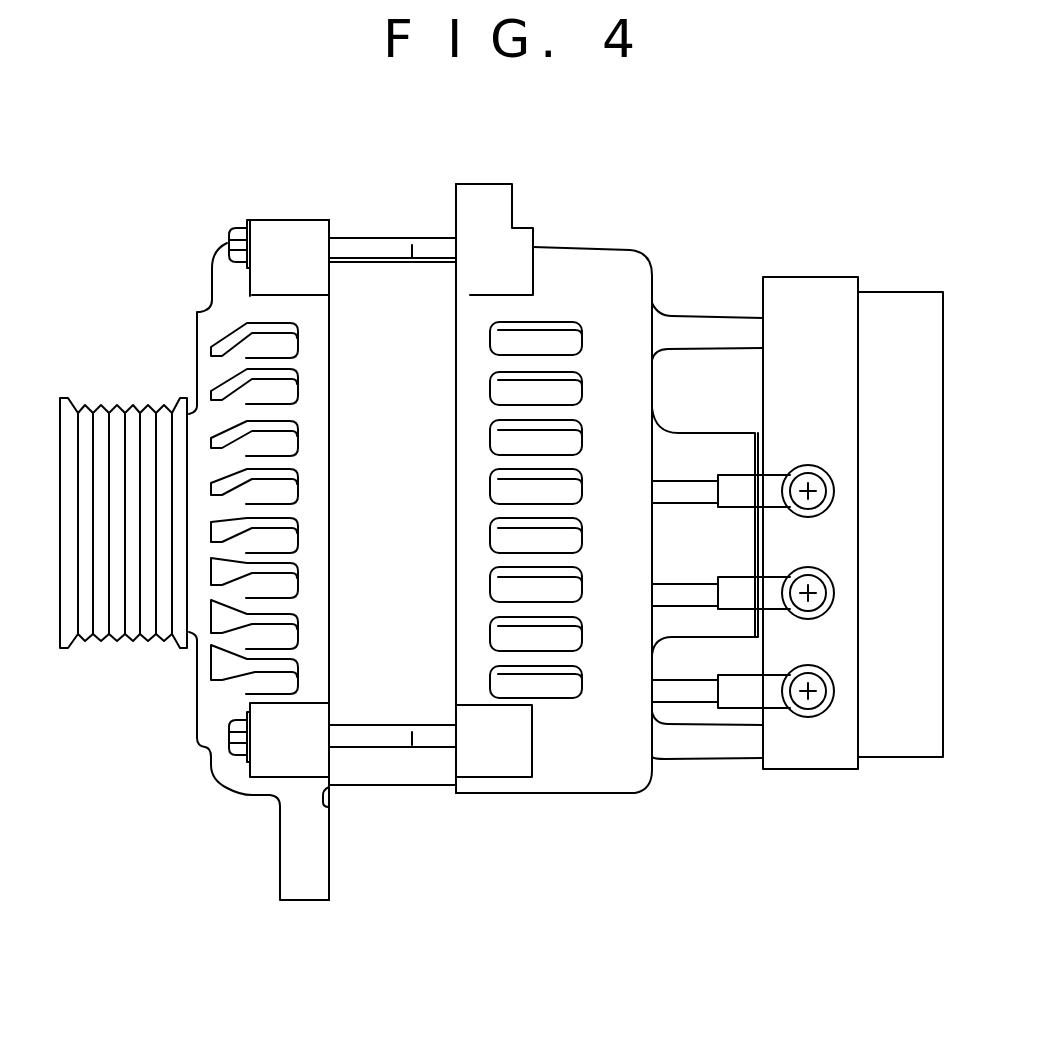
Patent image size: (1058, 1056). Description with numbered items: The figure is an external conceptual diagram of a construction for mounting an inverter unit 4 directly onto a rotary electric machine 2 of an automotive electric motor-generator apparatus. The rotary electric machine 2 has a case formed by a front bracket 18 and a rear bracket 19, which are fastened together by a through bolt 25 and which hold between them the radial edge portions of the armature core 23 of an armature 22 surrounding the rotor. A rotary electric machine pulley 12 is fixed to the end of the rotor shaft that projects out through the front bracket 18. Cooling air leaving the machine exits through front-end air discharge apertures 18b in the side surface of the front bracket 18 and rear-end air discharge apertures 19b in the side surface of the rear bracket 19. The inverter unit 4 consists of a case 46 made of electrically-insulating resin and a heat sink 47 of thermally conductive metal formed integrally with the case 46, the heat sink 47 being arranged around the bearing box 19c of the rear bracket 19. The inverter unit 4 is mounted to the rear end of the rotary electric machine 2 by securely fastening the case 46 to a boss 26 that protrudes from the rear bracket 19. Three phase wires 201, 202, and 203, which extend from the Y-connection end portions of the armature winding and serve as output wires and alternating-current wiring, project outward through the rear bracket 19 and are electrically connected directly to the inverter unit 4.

The rotary electric machine 2 is at (228, 215).
The rotary electric machine pulley 12 is at (85, 398).
The front bracket 18 is at (212, 266).
The front-end air discharge apertures 18b is at (250, 348).
The rear bracket 19 is at (567, 248).
The rear-end air discharge apertures 19b is at (570, 332).
The bearing box 19c is at (700, 437).
The armature 22 is at (418, 783).
The armature core 23 is at (375, 772).
The through bolt 25 is at (368, 244).
The boss 26 is at (714, 320).
The phase wire 201 is at (678, 488).
The phase wire 202 is at (678, 592).
The phase wire 203 is at (680, 690).
The inverter unit 4 is at (898, 200).
The case 46 is at (817, 283).
The heat sink 47 is at (893, 300).